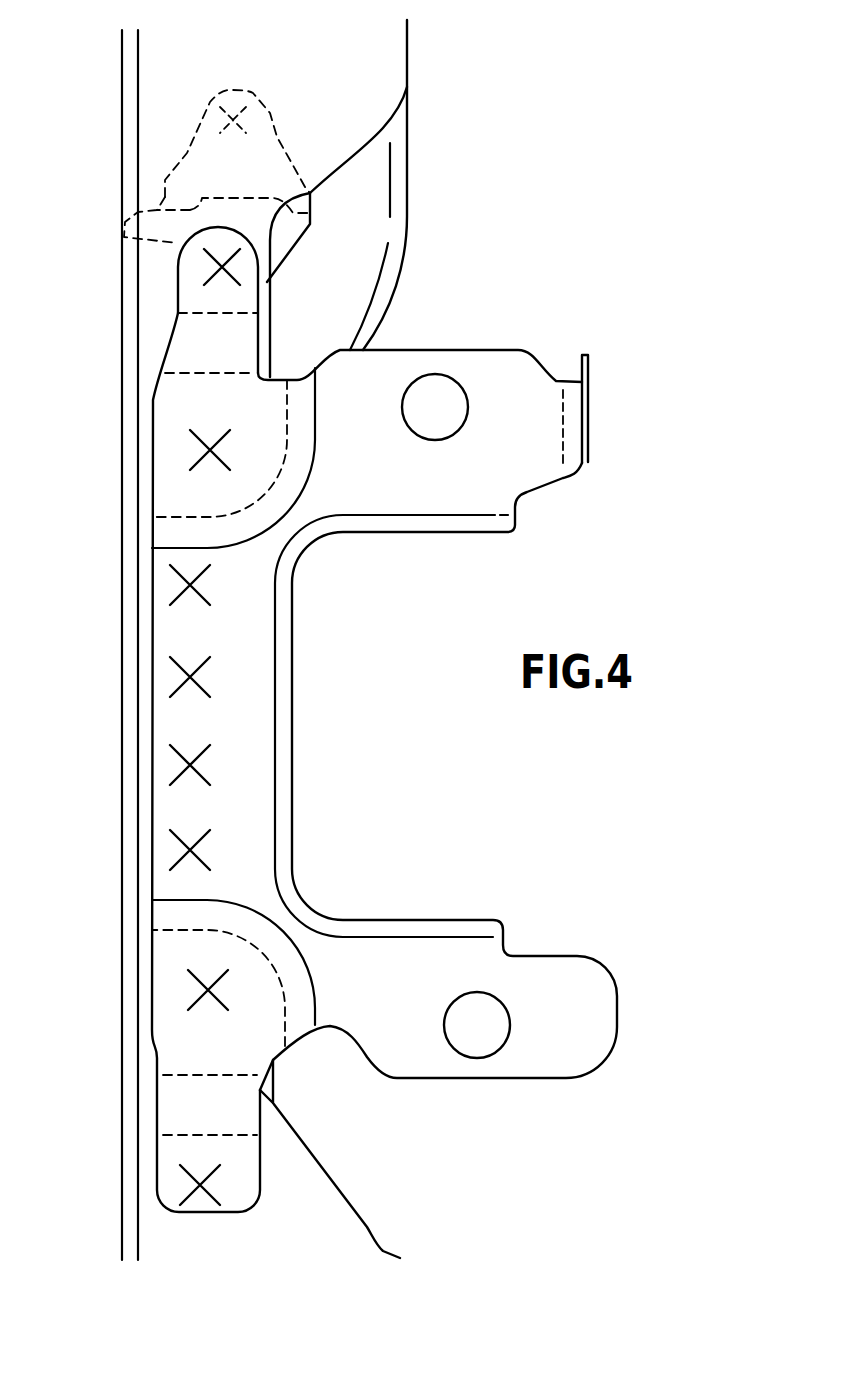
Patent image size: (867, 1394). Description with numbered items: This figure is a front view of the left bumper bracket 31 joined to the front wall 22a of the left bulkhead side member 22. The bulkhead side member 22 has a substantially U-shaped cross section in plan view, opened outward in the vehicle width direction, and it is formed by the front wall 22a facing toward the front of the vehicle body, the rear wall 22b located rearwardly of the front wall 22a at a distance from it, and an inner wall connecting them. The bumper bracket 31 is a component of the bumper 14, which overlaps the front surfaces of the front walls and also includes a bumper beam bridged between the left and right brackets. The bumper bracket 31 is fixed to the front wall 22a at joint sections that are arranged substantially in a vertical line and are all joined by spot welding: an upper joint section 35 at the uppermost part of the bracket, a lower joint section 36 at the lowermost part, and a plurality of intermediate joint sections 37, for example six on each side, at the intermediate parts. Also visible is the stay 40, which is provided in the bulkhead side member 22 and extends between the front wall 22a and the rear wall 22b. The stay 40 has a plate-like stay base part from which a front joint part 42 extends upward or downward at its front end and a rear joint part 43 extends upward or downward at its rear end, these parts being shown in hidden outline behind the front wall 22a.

The bulkhead side member 22 is at (424, 36).
The front wall 22a is at (369, 93).
The rear wall 22b is at (362, 305).
The rear joint part 43 is at (280, 141).
The front joint part 42 is at (288, 239).
The stay 40 is at (340, 223).
The bumper bracket 31 is at (490, 906).
The bumper 14 is at (384, 785).
The upper joint section 35 is at (180, 266).
The lower joint section 36 is at (188, 1188).
The intermediate joint section 37 is at (182, 572).